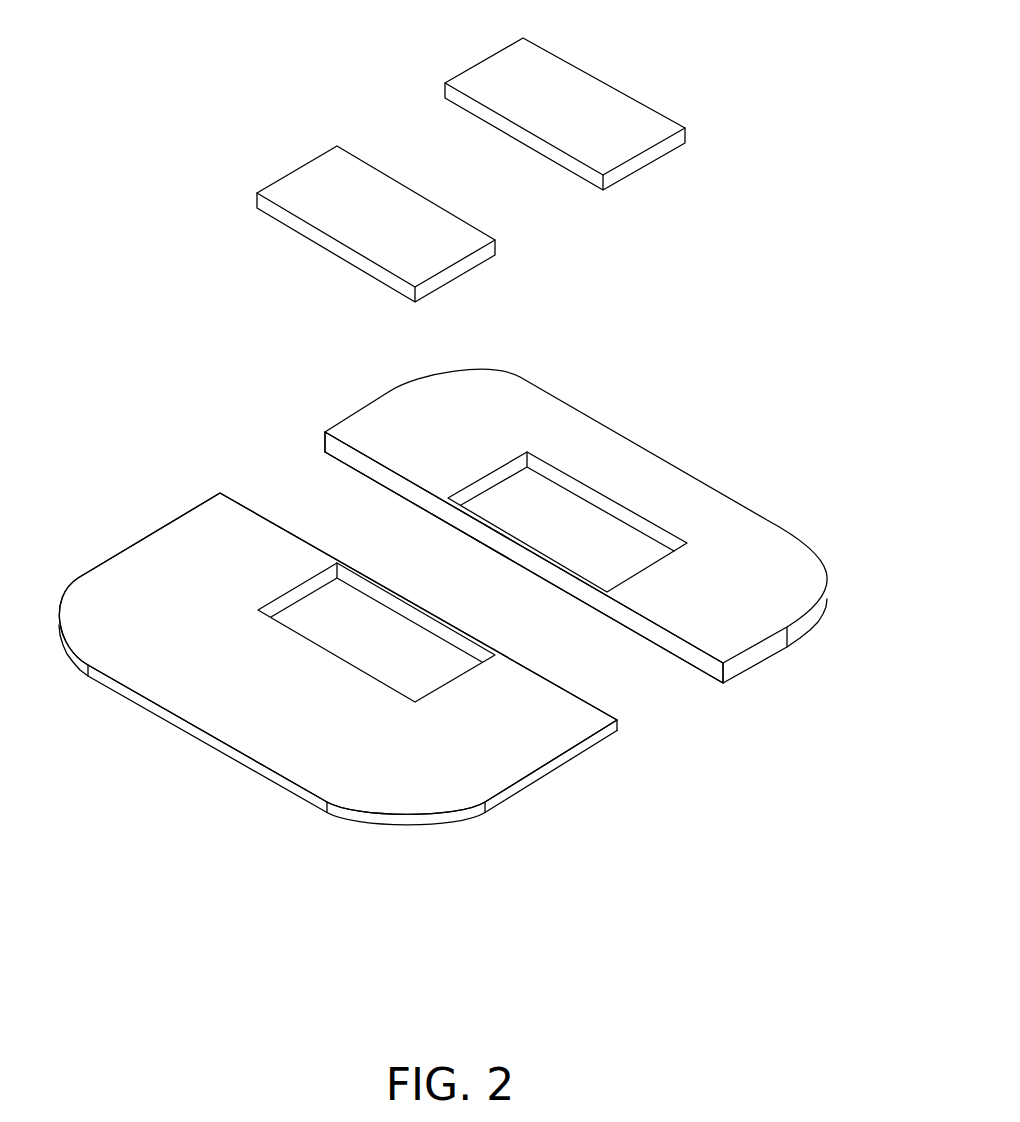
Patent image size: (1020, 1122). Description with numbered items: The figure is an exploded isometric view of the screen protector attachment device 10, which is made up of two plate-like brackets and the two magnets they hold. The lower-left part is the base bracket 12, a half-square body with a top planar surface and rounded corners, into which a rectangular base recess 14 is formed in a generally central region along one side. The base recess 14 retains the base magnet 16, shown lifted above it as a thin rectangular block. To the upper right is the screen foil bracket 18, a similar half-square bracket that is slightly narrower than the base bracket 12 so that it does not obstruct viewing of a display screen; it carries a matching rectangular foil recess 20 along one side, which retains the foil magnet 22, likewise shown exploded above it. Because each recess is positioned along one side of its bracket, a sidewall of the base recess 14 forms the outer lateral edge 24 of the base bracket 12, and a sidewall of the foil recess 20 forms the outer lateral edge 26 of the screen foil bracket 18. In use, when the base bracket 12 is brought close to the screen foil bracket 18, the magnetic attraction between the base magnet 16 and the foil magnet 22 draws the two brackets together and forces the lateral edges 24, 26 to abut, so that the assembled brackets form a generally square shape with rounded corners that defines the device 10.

The screen protector attachment device 10 is at (262, 78).
The base bracket 12 is at (252, 765).
The base recess 14 is at (430, 655).
The base magnet 16 is at (273, 220).
The screen foil bracket 18 is at (770, 522).
The foil recess 20 is at (620, 567).
The foil magnet 22 is at (588, 72).
The lateral edge of base bracket 24 is at (240, 502).
The lateral edge of screen foil bracket 26 is at (340, 450).